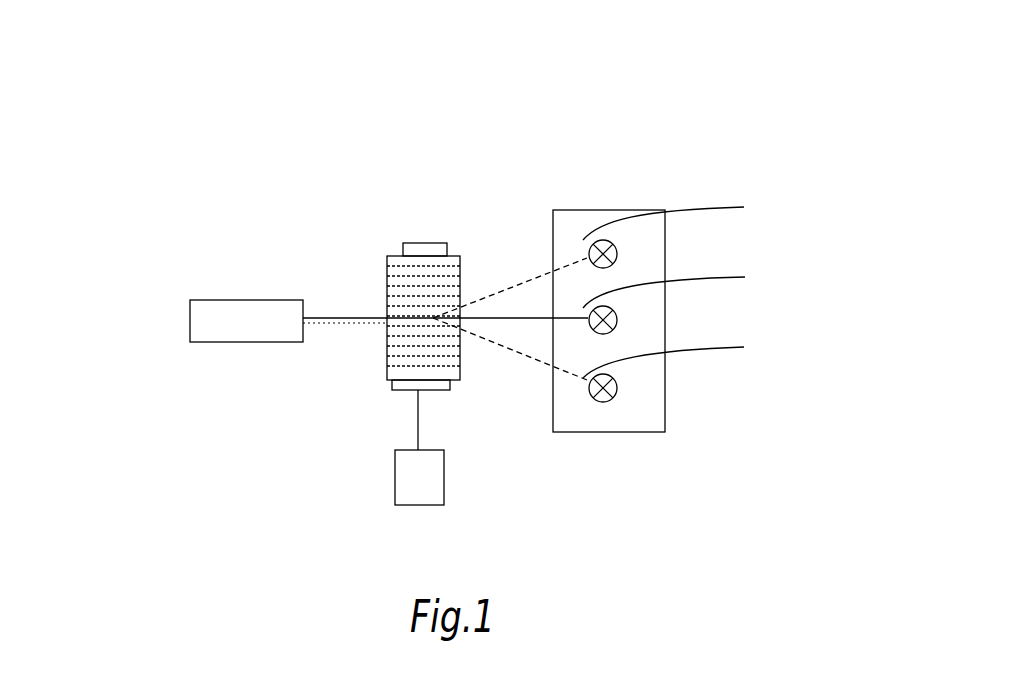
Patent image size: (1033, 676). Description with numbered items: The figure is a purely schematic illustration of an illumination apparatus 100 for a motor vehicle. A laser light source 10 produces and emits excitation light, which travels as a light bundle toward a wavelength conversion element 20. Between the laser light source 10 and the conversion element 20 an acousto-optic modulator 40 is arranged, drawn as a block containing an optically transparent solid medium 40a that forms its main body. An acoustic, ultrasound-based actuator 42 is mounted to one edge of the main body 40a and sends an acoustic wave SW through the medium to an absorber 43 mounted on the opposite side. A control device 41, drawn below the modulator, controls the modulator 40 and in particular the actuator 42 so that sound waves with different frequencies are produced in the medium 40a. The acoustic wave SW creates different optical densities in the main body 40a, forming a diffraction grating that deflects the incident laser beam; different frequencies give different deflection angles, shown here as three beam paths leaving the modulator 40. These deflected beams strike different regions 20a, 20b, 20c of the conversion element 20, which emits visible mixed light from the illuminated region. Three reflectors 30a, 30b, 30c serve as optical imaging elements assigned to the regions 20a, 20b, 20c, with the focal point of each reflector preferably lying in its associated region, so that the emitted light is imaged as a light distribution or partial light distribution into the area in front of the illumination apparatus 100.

The illumination apparatus 100 is at (160, 227).
The laser light source 10 is at (247, 277).
The acoustic wave SW is at (387, 338).
The acousto-optic modulator 40 is at (388, 246).
The solid medium 40a is at (405, 283).
The absorber 43 is at (438, 244).
The actuator 42 is at (384, 384).
The control device 41 is at (463, 493).
The wavelength conversion element 20 is at (614, 201).
The first region of the conversion element 20a is at (587, 330).
The second region of the conversion element 20b is at (608, 410).
The third region of the conversion element 20c is at (585, 256).
The first optical imaging element 30a is at (730, 283).
The second optical imaging element 30b is at (713, 353).
The third optical imaging element 30c is at (696, 203).